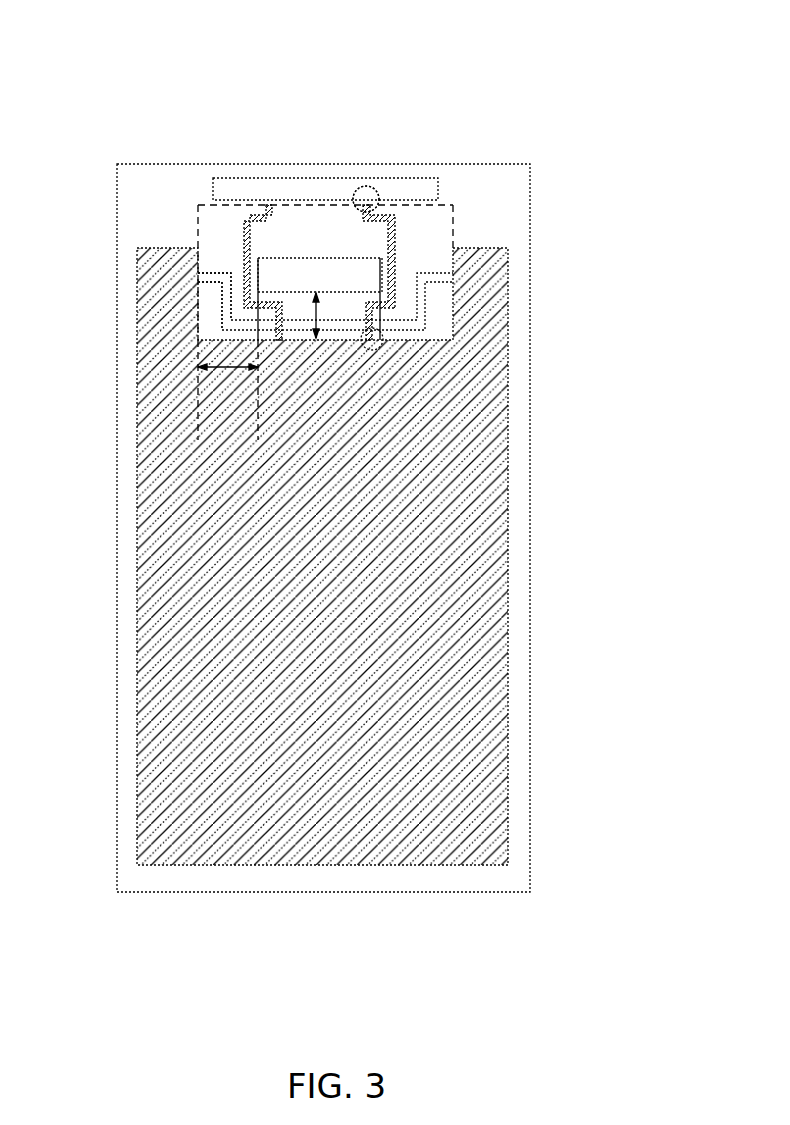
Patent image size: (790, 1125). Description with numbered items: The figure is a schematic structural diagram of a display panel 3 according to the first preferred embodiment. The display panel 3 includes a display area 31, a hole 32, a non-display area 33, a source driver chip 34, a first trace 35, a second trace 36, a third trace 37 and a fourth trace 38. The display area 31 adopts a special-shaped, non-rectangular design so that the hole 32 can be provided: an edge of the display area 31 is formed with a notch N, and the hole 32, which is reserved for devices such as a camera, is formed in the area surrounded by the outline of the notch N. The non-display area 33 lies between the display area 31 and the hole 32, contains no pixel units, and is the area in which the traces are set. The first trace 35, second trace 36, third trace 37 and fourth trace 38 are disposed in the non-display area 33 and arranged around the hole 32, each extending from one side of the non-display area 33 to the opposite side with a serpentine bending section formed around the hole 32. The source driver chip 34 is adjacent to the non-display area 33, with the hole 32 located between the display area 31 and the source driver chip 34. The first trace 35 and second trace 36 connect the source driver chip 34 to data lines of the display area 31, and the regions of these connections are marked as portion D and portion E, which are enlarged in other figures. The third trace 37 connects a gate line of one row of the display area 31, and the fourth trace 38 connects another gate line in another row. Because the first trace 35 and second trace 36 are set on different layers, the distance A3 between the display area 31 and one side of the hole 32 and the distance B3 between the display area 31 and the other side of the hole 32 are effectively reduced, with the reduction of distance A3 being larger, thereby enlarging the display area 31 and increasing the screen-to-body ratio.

The display panel 3 is at (148, 62).
The display area 31 is at (530, 518).
The hole 32 is at (302, 257).
The non-display area 33 is at (453, 242).
The source driver chip 34 is at (262, 178).
The first trace 35 is at (396, 217).
The second trace 36 is at (388, 203).
The third trace 37 is at (220, 273).
The fourth trace 38 is at (222, 293).
The portion D is at (366, 186).
The portion E is at (380, 346).
The notch N is at (444, 326).
The distance A3 is at (228, 390).
The distance B3 is at (333, 315).